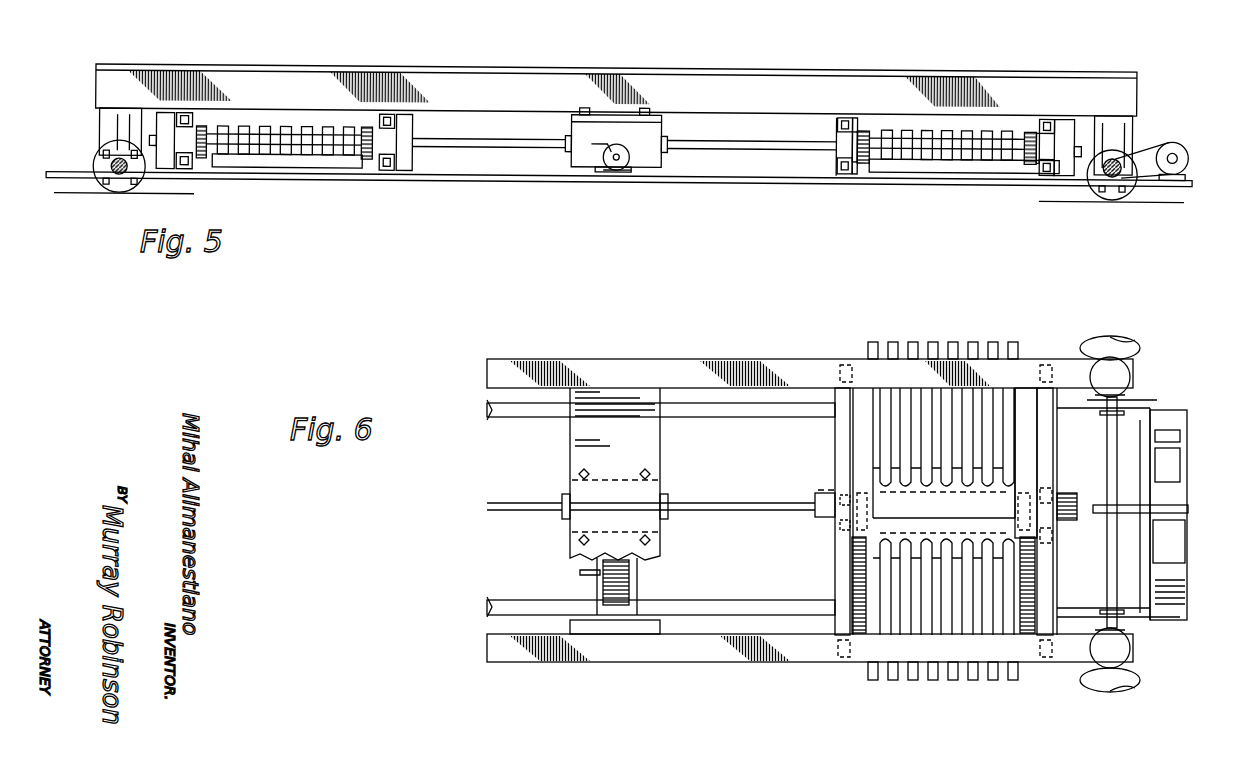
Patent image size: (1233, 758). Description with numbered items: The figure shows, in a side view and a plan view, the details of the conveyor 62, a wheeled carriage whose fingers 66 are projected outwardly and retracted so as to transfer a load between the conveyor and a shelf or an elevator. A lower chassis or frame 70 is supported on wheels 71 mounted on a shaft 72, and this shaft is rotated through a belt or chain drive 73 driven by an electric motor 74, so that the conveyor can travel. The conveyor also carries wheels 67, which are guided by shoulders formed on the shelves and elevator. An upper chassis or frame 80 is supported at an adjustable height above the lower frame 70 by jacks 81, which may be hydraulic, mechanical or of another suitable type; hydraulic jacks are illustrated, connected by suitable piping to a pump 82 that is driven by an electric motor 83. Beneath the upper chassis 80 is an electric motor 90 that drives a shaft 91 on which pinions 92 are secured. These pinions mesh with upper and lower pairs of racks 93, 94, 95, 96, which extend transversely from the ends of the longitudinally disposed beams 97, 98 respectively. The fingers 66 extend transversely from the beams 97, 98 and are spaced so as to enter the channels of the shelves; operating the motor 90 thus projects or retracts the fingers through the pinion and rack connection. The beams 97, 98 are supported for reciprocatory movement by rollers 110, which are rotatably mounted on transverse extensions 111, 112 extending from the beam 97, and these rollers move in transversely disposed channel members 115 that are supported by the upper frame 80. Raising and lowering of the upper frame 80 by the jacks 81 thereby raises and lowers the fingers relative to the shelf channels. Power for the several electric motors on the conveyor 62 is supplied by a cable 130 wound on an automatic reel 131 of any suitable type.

In FIG. 5, the conveyor 62 is at (665, 203).
In FIG. 6, the conveyor 62 is at (635, 691).
In FIG. 5, the fingers 66 is at (937, 150).
In FIG. 6, the fingers 66 is at (940, 342).
In FIG. 6, the wheels 67 is at (1100, 340).
In FIG. 5, the lower chassis or frame 70 is at (990, 170).
In FIG. 6, the lower chassis or frame 70 is at (1077, 618).
In FIG. 5, the wheels 71 is at (1105, 186).
In FIG. 6, the shaft 72 is at (1106, 452).
In FIG. 5, the belt or chain drive 73 is at (1145, 145).
In FIG. 6, the belt or chain drive 73 is at (1190, 510).
In FIG. 5, the electric motor 74 is at (1183, 138).
In FIG. 6, the electric motor 74 is at (1188, 535).
In FIG. 5, the upper chassis or frame 80 is at (942, 70).
In FIG. 6, the upper chassis or frame 80 is at (735, 372).
In FIG. 5, the jacks 81 is at (1135, 120).
In FIG. 6, the jacks 81 is at (1112, 358).
In FIG. 6, the pump 82 is at (1182, 438).
In FIG. 6, the electric motor 83 is at (1182, 466).
In FIG. 5, the electric motor 90 is at (665, 124).
In FIG. 6, the electric motor 90 is at (615, 511).
In FIG. 5, the shaft 91 is at (688, 146).
In FIG. 6, the shaft 91 is at (707, 500).
In FIG. 5, the pinions 92 is at (838, 126).
In FIG. 6, the pinions 92 is at (850, 540).
In FIG. 5, the rack 93 is at (866, 124).
In FIG. 6, the rack 93 is at (847, 398).
In FIG. 5, the rack 94 is at (866, 158).
In FIG. 6, the rack 94 is at (855, 580).
In FIG. 5, the rack 95 is at (1031, 124).
In FIG. 6, the rack 95 is at (1028, 398).
In FIG. 5, the rack 96 is at (1031, 158).
In FIG. 6, the rack 96 is at (1037, 558).
In FIG. 6, the beam 97 is at (941, 537).
In FIG. 6, the beam 98 is at (950, 508).
In FIG. 5, the rollers 110 is at (846, 112).
In FIG. 6, the rollers 110 is at (836, 373).
In FIG. 6, the transverse extension 111 is at (850, 432).
In FIG. 6, the transverse extension 112 is at (1030, 436).
In FIG. 5, the channel members 115 is at (838, 168).
In FIG. 5, the cable 130 is at (598, 142).
In FIG. 6, the cable 130 is at (582, 572).
In FIG. 5, the automatic reel 131 is at (610, 160).
In FIG. 6, the automatic reel 131 is at (630, 600).